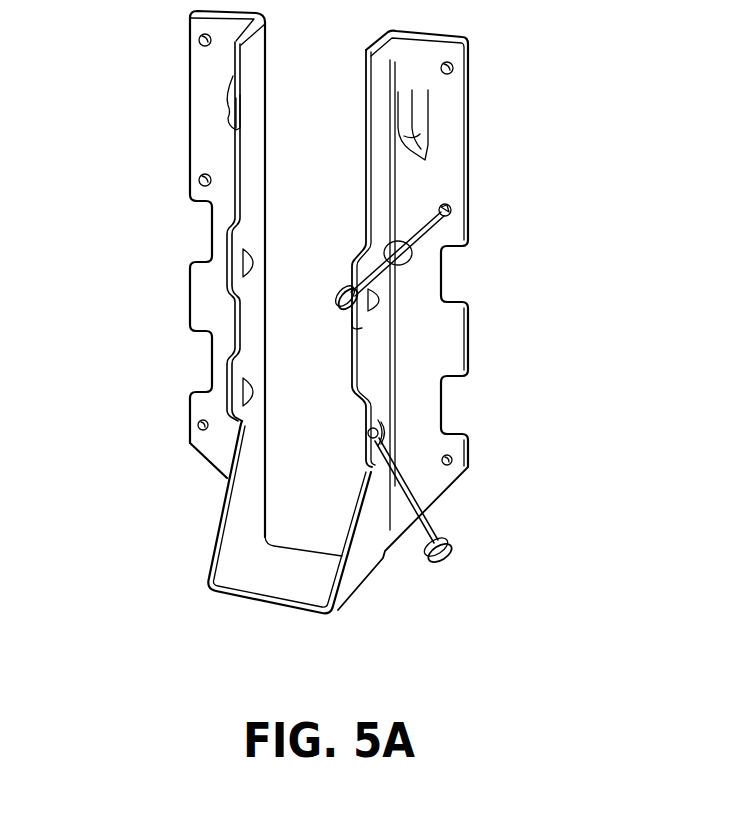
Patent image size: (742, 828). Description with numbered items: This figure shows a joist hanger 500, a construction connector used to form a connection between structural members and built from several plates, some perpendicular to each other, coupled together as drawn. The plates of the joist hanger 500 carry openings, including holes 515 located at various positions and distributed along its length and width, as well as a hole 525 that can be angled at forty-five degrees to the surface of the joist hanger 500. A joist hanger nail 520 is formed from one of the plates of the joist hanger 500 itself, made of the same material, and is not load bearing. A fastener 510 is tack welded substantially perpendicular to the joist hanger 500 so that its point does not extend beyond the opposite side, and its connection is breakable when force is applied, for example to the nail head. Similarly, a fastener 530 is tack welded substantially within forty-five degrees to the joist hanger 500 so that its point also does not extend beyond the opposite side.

The joist hanger 500 is at (275, 572).
The fastener 510 is at (343, 290).
The hole 515 is at (197, 176).
The joist hanger nail 520 is at (425, 128).
The hole 525 is at (368, 433).
The fastener 530 is at (439, 532).